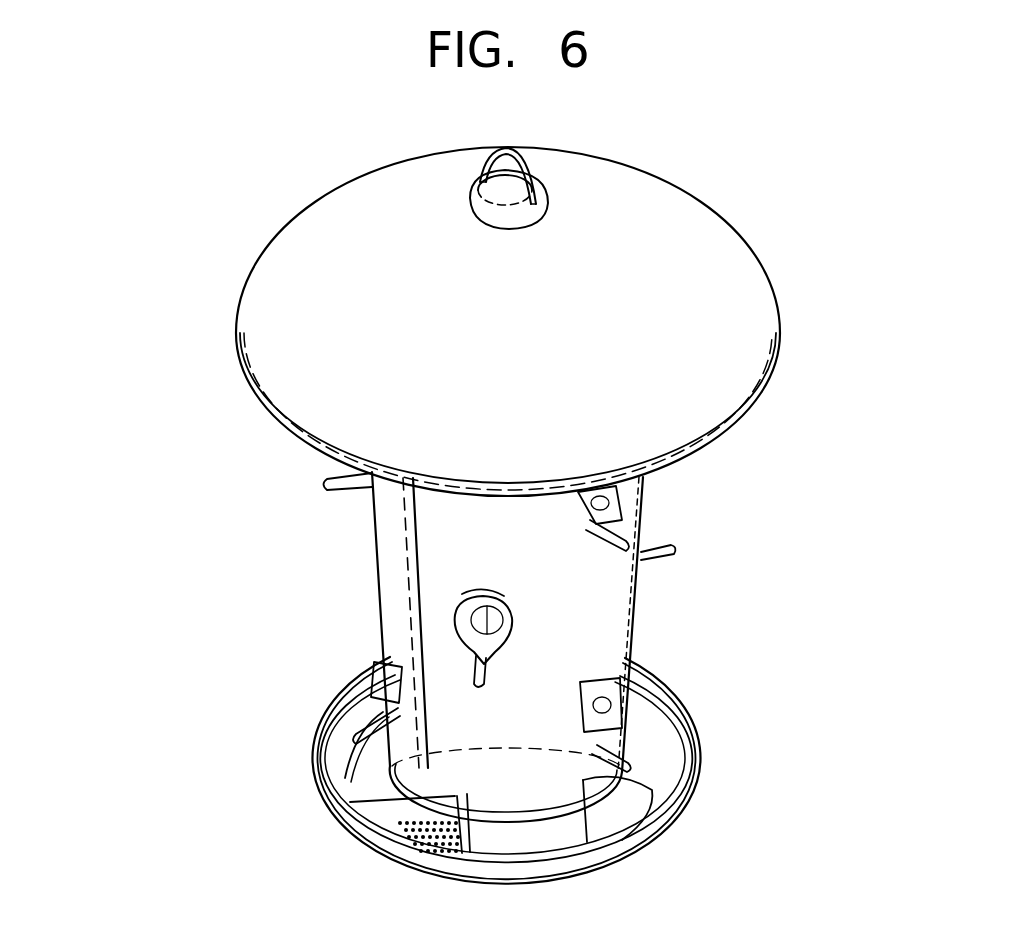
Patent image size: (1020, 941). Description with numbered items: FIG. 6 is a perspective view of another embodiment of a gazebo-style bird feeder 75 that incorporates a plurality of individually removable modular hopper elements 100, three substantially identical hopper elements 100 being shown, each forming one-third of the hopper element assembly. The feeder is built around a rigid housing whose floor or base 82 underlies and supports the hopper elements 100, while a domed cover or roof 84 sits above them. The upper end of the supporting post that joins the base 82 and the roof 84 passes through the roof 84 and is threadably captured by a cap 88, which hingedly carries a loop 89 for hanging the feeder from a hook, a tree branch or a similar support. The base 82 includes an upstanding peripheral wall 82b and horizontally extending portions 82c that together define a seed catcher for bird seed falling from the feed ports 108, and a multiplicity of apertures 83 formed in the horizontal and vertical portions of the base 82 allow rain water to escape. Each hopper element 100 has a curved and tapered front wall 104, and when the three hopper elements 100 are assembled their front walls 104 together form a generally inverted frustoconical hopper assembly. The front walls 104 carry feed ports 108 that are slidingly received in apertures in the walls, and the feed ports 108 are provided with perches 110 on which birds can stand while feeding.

The bird feeder 75 is at (168, 546).
The base 82 is at (494, 791).
The upstanding peripheral wall 82b is at (320, 780).
The horizontally extending portions 82c is at (640, 797).
The apertures 83 is at (410, 840).
The roof 84 is at (743, 298).
The cap 88 is at (491, 212).
The loop 89 is at (517, 148).
The hopper elements 100 is at (393, 604).
The front wall 104 is at (387, 552).
The feed ports 108 is at (497, 604).
The perches 110 is at (481, 684).